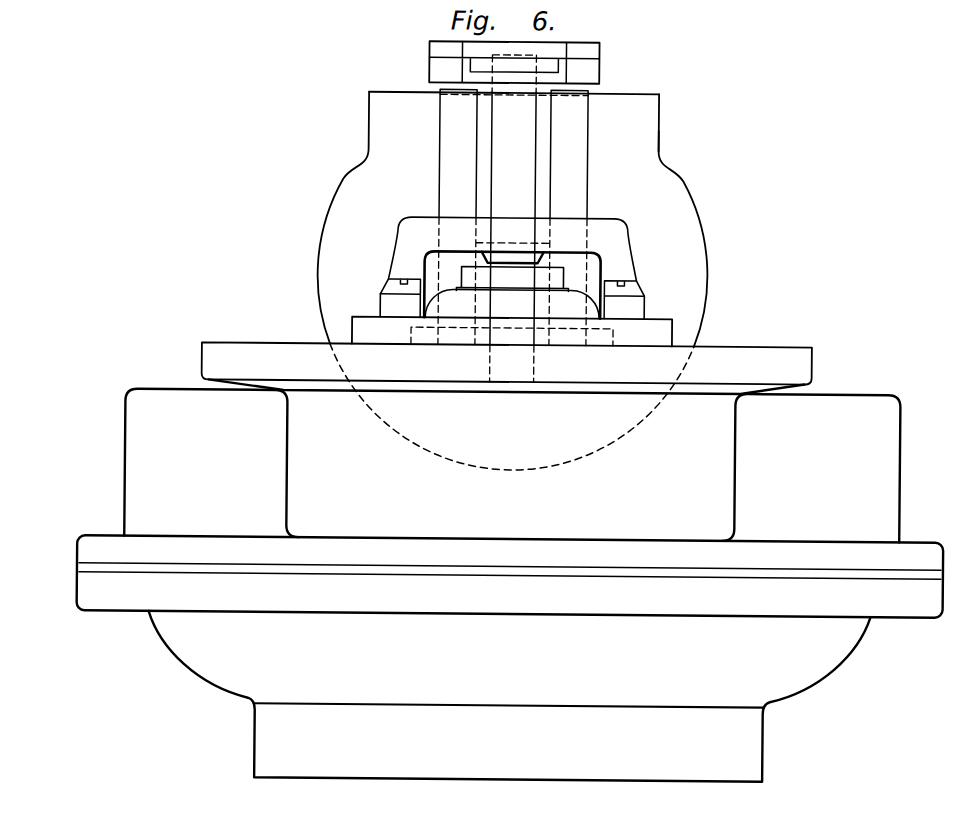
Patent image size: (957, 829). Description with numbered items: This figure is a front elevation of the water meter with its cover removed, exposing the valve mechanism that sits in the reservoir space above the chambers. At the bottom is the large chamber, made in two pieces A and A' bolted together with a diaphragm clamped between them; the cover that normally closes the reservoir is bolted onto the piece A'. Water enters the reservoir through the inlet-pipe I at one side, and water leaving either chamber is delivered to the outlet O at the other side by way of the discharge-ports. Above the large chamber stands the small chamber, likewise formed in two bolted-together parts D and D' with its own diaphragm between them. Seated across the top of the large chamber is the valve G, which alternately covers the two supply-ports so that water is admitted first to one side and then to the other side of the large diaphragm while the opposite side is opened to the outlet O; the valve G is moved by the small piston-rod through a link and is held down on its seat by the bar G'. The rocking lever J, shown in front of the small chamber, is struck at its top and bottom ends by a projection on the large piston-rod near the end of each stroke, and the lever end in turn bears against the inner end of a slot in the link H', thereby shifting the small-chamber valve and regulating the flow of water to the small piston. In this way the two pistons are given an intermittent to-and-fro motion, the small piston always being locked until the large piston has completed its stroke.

The link H' is at (536, 68).
The rocking lever J is at (513, 237).
The small chamber part D is at (512, 281).
The small chamber part D' is at (663, 208).
The bar G' is at (512, 268).
The valve G is at (512, 292).
The large chamber piece A' is at (506, 408).
The inlet-pipe I is at (206, 463).
The outlet O is at (811, 468).
The large chamber piece A is at (509, 659).